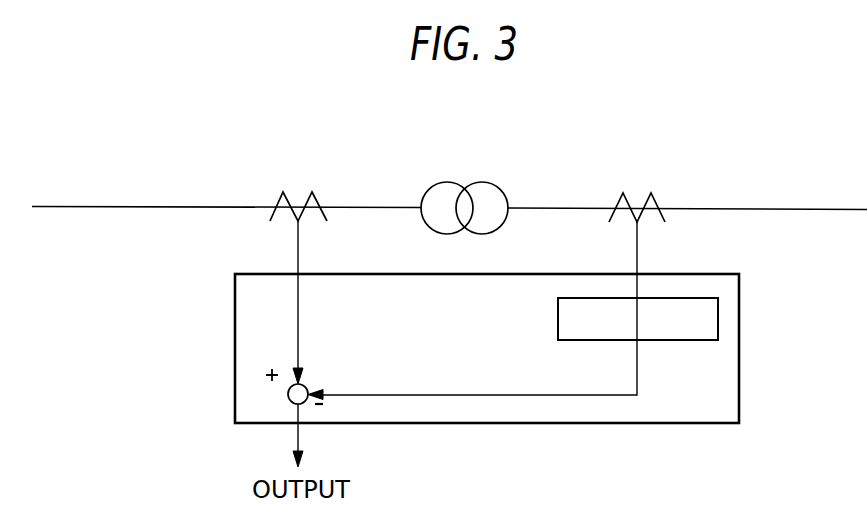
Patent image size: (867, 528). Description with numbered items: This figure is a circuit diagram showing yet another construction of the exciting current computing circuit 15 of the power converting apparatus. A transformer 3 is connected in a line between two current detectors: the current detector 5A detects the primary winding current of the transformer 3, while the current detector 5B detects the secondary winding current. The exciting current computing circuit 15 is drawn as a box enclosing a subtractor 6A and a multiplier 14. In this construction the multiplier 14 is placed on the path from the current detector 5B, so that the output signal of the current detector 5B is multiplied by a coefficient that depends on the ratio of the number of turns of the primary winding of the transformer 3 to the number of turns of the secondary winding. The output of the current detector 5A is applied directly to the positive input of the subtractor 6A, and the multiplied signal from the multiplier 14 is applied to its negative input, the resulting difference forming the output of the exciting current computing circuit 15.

The transformer 3 is at (445, 182).
The current detector 5A is at (298, 192).
The current detector 5B is at (638, 195).
The subtractor 6A is at (312, 379).
The multiplier 14 is at (557, 318).
The exciting current computing circuit 15 is at (740, 318).